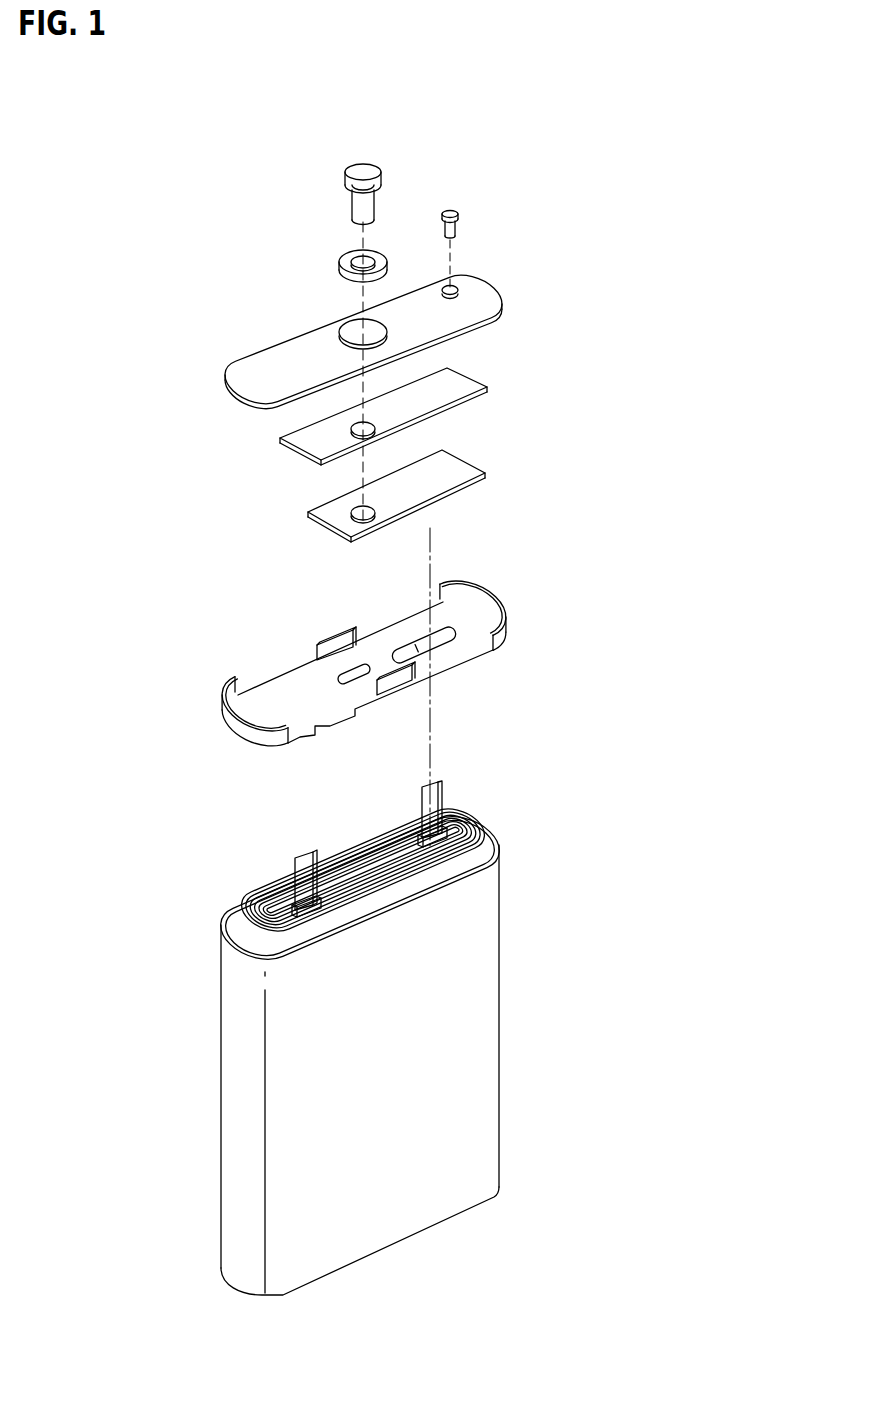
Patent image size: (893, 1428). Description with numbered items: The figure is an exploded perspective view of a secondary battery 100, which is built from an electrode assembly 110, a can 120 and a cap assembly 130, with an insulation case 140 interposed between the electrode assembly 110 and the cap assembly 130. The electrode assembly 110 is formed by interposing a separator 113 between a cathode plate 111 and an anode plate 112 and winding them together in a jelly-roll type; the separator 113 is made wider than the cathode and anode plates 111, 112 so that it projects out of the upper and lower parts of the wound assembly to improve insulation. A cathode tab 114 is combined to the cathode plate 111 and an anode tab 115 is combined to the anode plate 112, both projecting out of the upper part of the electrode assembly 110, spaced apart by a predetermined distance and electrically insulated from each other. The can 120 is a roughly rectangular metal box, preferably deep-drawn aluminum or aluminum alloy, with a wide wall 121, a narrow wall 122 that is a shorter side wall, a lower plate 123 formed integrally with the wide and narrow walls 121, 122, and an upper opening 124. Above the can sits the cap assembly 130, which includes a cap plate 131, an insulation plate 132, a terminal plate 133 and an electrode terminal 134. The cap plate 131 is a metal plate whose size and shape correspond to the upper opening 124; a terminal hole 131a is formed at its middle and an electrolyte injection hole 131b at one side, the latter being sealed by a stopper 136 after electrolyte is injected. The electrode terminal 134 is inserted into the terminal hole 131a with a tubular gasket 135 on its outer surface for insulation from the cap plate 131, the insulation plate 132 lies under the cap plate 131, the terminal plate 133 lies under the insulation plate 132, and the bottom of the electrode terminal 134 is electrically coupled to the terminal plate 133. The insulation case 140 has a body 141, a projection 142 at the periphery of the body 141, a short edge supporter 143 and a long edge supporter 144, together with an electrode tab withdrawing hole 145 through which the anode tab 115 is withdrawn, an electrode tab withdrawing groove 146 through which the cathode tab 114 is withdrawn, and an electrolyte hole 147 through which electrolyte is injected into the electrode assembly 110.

The secondary battery 100 is at (82, 137).
The electrode assembly 110 is at (555, 773).
The cathode plate 111 is at (487, 827).
The anode plate 112 is at (463, 818).
The separator 113 is at (477, 817).
The cathode tab 114 is at (305, 853).
The anode tab 115 is at (430, 808).
The can 120 is at (137, 1143).
The wide wall 121 is at (281, 1137).
The narrow wall 122 is at (233, 1207).
The lower plate 123 is at (284, 1290).
The upper opening 124 is at (490, 852).
The cap assembly 130 is at (226, 284).
The cap plate 131 is at (250, 381).
The terminal hole 131a is at (347, 331).
The electrolyte injection hole 131b is at (454, 288).
The insulation plate 132 is at (305, 437).
The terminal plate 133 is at (327, 511).
The electrode terminal 134 is at (355, 170).
The gasket 135 is at (343, 253).
The stopper 136 is at (450, 210).
The insulation case 140 is at (243, 665).
The body 141 is at (397, 635).
The projection 142 is at (486, 659).
The short edge supporter 143 is at (238, 727).
The long edge supporter 144 is at (334, 648).
The electrode tab withdrawing hole 145 is at (447, 632).
The electrode tab withdrawing groove 146 is at (328, 719).
The electrolyte hole 147 is at (345, 672).